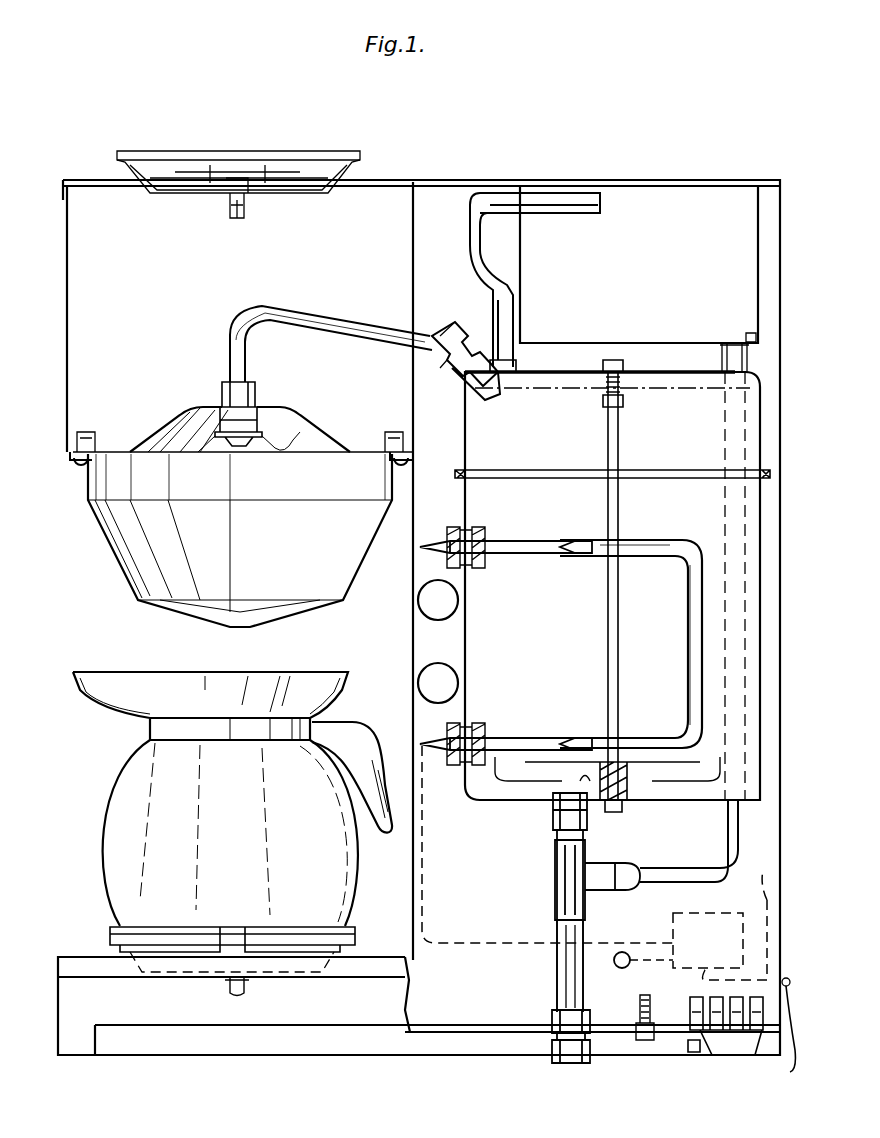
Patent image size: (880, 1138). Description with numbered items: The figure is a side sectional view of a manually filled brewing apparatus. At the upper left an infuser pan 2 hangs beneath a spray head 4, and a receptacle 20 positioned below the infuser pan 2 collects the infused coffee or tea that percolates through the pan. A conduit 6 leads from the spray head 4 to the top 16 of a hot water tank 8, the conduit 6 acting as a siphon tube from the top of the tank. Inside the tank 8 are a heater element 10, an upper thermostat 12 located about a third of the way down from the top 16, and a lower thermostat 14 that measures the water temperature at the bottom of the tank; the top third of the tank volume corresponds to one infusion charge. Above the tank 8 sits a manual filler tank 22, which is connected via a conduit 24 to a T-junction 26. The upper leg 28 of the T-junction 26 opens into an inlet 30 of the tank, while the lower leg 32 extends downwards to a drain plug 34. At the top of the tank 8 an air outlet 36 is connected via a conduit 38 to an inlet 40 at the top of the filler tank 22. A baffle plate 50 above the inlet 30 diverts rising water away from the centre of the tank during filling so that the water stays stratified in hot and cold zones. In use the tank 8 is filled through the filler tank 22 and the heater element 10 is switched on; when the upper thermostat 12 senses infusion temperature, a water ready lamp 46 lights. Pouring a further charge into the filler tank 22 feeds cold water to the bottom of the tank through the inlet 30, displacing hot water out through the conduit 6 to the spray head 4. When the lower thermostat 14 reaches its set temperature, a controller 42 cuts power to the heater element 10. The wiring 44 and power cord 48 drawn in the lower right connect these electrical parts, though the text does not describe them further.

The infuser pan 2 is at (312, 606).
The spray head 4 is at (287, 434).
The conduit 6 is at (320, 318).
The hot water tank 8 is at (464, 428).
The heater element 10 is at (656, 540).
The upper thermostat 12 is at (503, 546).
The lower thermostat 14 is at (517, 740).
The top 16 is at (520, 382).
The receptacle 20 is at (215, 856).
The manual filler tank 22 is at (618, 285).
The conduit 24 is at (748, 600).
The T-junction 26 is at (592, 900).
The upper leg 28 is at (580, 862).
The inlet 30 is at (551, 804).
The lower leg 32 is at (556, 906).
The drain plug 34 is at (565, 1060).
The air outlet 36 is at (485, 350).
The conduit 38 is at (478, 268).
The inlet 40 is at (590, 216).
The controller 42 is at (690, 955).
The wiring 44 is at (775, 895).
The water ready lamp 46 is at (621, 968).
The power cord 48 is at (715, 1039).
The baffle plate 50 is at (690, 780).